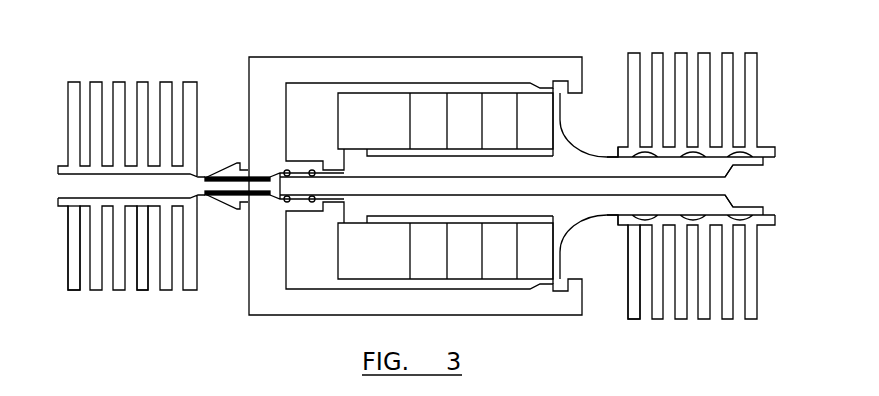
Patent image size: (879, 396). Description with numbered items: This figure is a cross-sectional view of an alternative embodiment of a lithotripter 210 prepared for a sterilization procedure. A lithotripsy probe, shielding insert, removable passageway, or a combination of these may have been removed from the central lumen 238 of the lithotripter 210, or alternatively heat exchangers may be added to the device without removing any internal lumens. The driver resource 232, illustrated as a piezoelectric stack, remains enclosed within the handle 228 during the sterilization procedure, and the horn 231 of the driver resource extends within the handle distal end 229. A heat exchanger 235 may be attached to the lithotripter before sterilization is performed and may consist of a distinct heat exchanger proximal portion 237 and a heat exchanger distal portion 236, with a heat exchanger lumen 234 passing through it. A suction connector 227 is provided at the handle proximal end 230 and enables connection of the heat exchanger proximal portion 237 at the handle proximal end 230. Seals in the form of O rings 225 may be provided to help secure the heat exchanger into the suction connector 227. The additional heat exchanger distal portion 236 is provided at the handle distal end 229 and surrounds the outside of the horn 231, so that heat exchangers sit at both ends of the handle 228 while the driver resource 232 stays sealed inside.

The lithotripter 210 is at (511, 169).
The O ring 225 is at (235, 206).
The suction connector 227 is at (231, 165).
The handle 228 is at (462, 72).
The handle distal end 229 is at (750, 211).
The handle proximal end 230 is at (268, 57).
The driver resource horn 231 is at (752, 158).
The driver resource 232 is at (538, 112).
The heat exchanger lumen 234 is at (77, 187).
The heat exchanger 235 is at (146, 294).
The heat exchanger distal portion 236 is at (745, 88).
The heat exchanger proximal portion 237 is at (75, 292).
The lumen 238 is at (712, 187).